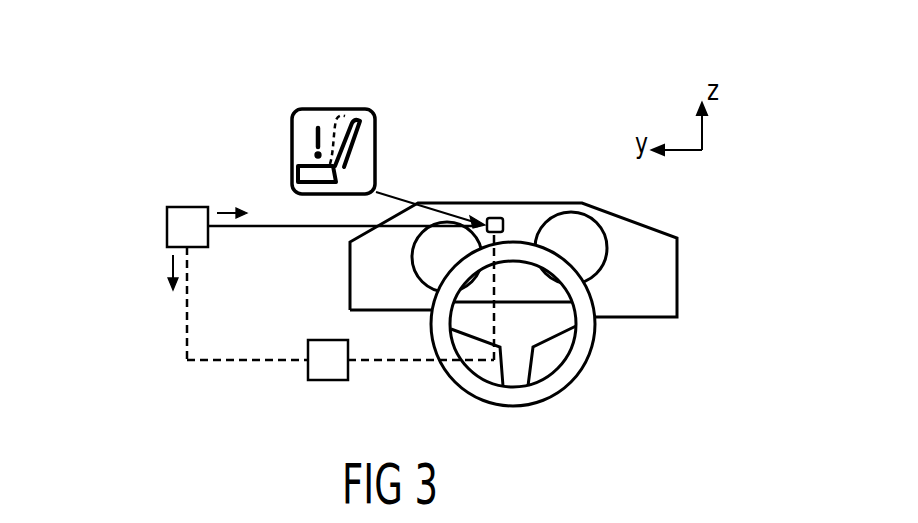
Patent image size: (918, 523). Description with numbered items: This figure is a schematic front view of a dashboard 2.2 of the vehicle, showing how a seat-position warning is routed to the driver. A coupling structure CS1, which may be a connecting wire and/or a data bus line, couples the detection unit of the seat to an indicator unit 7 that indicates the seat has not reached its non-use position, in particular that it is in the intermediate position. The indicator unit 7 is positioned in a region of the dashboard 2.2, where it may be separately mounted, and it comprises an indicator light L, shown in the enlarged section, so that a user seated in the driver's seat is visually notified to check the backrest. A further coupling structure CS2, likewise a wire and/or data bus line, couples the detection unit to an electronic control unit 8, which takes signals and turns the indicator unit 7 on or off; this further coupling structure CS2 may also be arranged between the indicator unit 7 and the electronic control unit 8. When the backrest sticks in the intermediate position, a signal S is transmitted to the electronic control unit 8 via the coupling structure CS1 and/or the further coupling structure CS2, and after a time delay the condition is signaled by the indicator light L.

The indicator unit 7 is at (186, 218).
The electronic control unit 8 is at (320, 368).
The indicator light L is at (345, 108).
The dashboard 2.2 is at (668, 260).
The coupling structure CS1 is at (270, 227).
The further coupling structure CS2 is at (186, 330).
The signal S is at (198, 232).